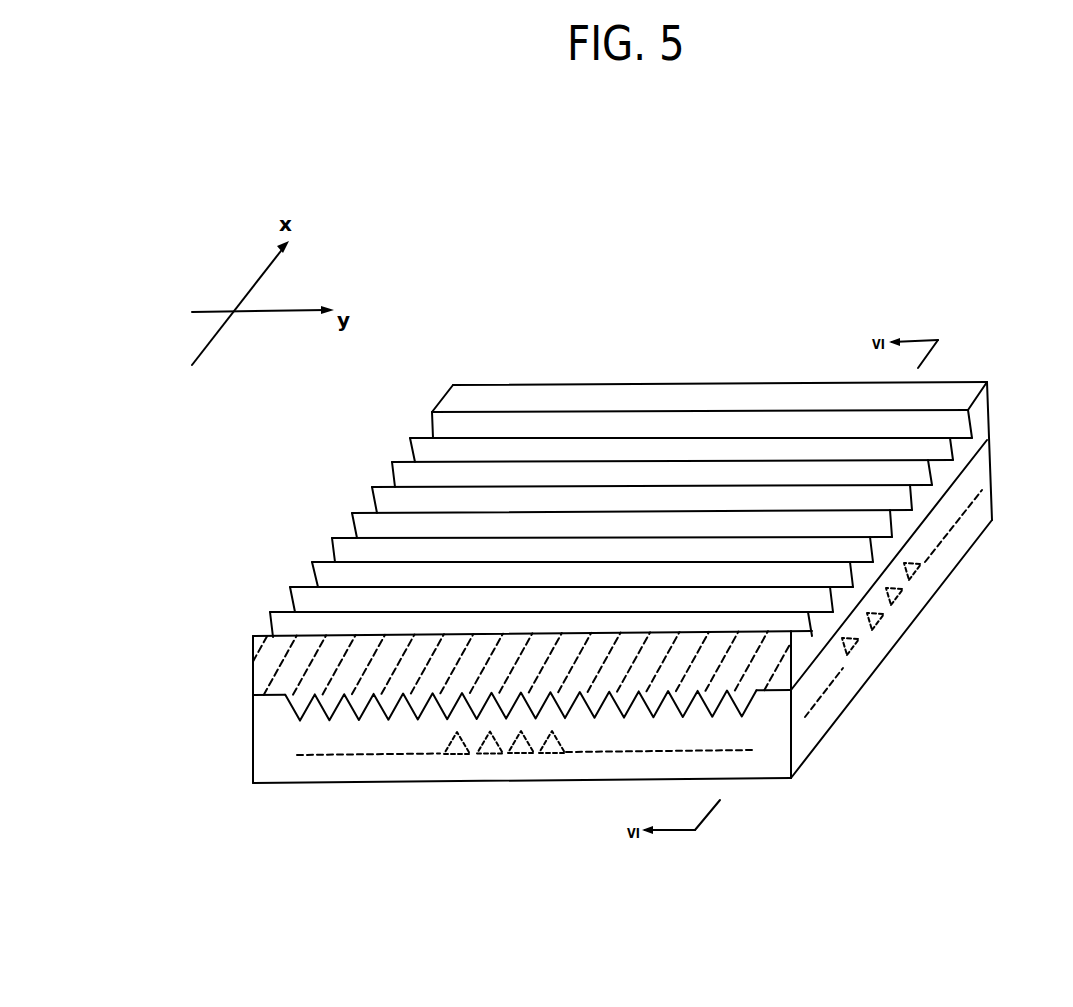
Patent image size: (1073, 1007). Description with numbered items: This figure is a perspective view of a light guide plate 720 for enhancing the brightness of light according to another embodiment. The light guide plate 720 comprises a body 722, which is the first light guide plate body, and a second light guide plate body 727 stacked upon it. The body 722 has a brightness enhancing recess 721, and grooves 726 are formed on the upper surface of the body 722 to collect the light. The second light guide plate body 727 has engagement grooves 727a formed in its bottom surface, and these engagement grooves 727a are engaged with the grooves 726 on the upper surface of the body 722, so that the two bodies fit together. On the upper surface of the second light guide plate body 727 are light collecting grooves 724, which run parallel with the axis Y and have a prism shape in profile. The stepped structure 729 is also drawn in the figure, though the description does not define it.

The light guide plate for enhancing brightness of light 720 is at (932, 706).
The brightness enhancing recess 721 is at (548, 760).
The body 722 is at (768, 763).
The light collecting grooves 724 is at (758, 385).
The grooves 726 is at (750, 692).
The second light guide plate body 727 is at (298, 688).
The engagement grooves 727a is at (262, 697).
The stepped portion 729 is at (335, 515).